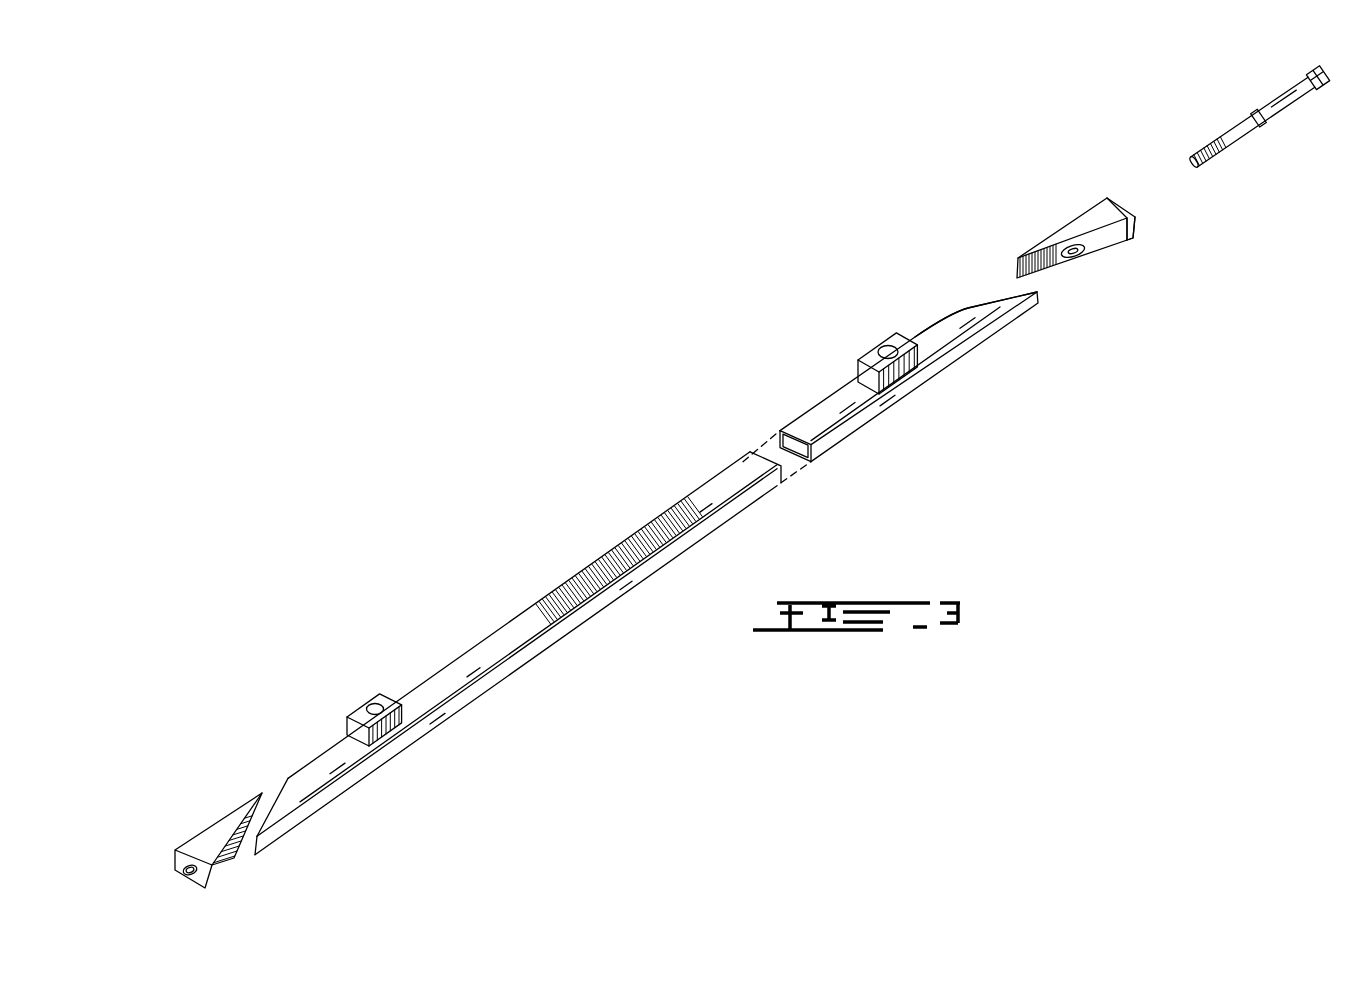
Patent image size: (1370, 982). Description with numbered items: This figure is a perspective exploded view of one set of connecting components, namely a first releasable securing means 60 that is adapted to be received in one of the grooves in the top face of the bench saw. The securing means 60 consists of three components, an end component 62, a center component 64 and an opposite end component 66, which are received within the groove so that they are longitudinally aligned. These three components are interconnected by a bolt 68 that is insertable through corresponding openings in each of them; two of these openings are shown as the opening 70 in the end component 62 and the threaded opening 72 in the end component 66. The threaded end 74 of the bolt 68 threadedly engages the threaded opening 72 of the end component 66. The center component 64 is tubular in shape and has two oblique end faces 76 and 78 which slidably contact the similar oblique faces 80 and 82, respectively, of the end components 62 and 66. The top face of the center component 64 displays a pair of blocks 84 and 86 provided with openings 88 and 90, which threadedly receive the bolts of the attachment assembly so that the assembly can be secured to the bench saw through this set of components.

The releasable securing means 60 is at (605, 484).
The end component 62 is at (1097, 213).
The center component 64 is at (532, 612).
The end component 66 is at (213, 832).
The bolt 68 is at (1287, 97).
The opening 70 is at (1075, 258).
The threaded opening 72 is at (258, 852).
The threaded end 74 is at (1194, 157).
The oblique end face 76 is at (962, 310).
The oblique end face 78 is at (288, 785).
The oblique face 80 is at (1112, 240).
The oblique face 82 is at (234, 858).
The block 84 is at (870, 357).
The block 86 is at (386, 697).
The opening 88 is at (887, 346).
The opening 90 is at (372, 708).